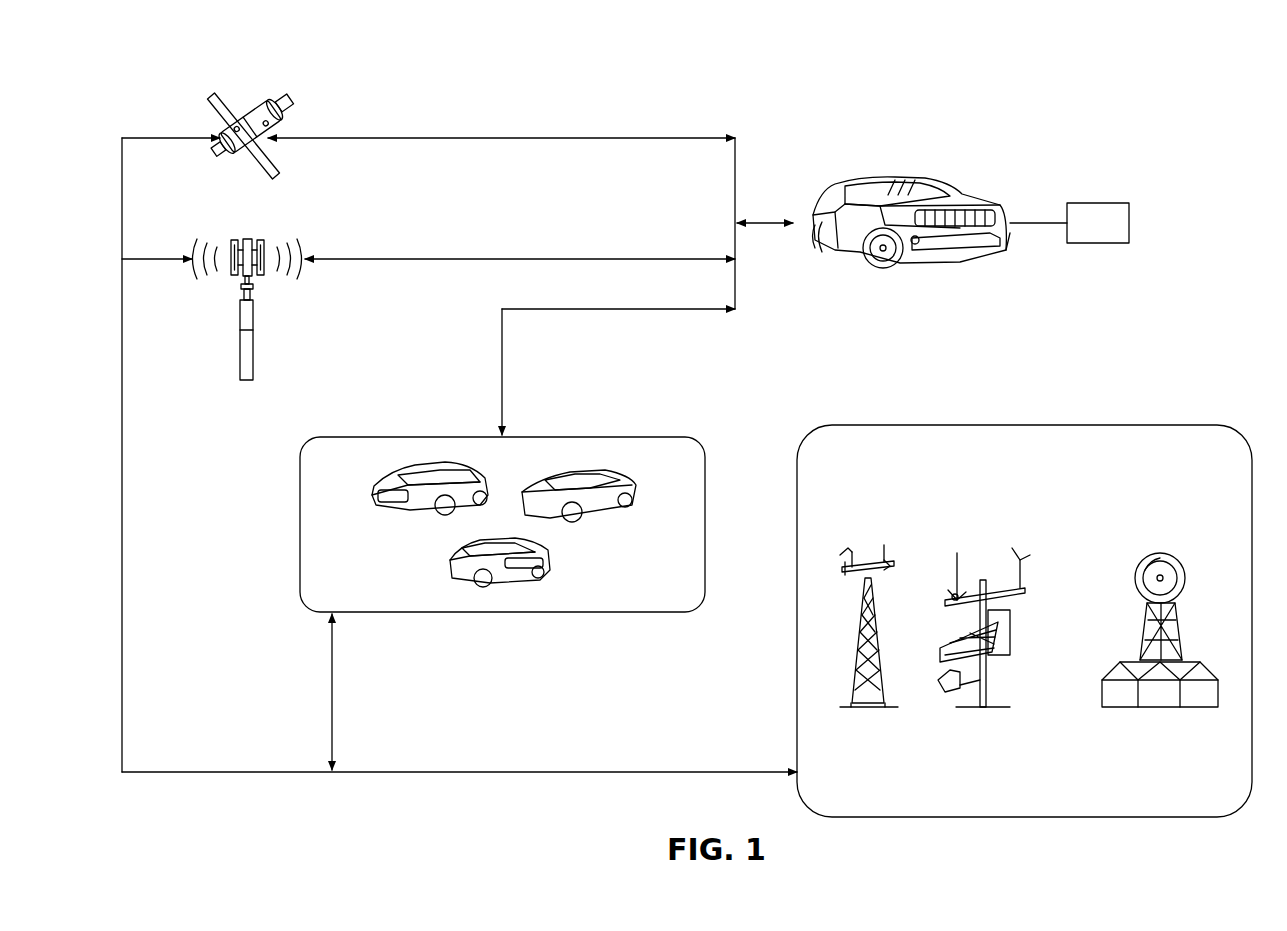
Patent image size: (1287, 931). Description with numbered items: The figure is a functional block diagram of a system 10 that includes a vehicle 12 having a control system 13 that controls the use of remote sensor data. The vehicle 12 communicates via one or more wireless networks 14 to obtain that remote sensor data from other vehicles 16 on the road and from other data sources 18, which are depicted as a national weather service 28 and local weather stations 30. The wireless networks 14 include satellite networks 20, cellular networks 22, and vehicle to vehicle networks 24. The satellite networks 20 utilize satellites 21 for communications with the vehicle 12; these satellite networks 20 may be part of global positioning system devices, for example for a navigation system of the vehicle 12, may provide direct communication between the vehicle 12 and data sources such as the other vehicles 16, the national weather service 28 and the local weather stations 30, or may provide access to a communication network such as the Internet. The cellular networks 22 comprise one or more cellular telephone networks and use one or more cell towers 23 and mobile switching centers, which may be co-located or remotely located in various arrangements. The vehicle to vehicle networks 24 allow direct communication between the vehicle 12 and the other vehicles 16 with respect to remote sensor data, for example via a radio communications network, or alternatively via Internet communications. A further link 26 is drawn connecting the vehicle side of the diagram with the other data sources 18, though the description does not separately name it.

The system 10 is at (156, 92).
The vehicle 12 is at (969, 177).
The control system 13 is at (1098, 203).
The wireless networks 14 is at (766, 204).
The other vehicles 16 is at (292, 530).
The other data sources 18 is at (828, 790).
The satellite networks 20 is at (331, 138).
The satellites 21 is at (212, 96).
The cellular networks 22 is at (336, 259).
The cell towers 23 is at (240, 340).
The vehicle to vehicle networks 24 is at (502, 374).
The vehicle-to-infrastructure communication link 26 is at (550, 772).
The national weather service 28 is at (1182, 553).
The local weather stations 30 is at (915, 576).